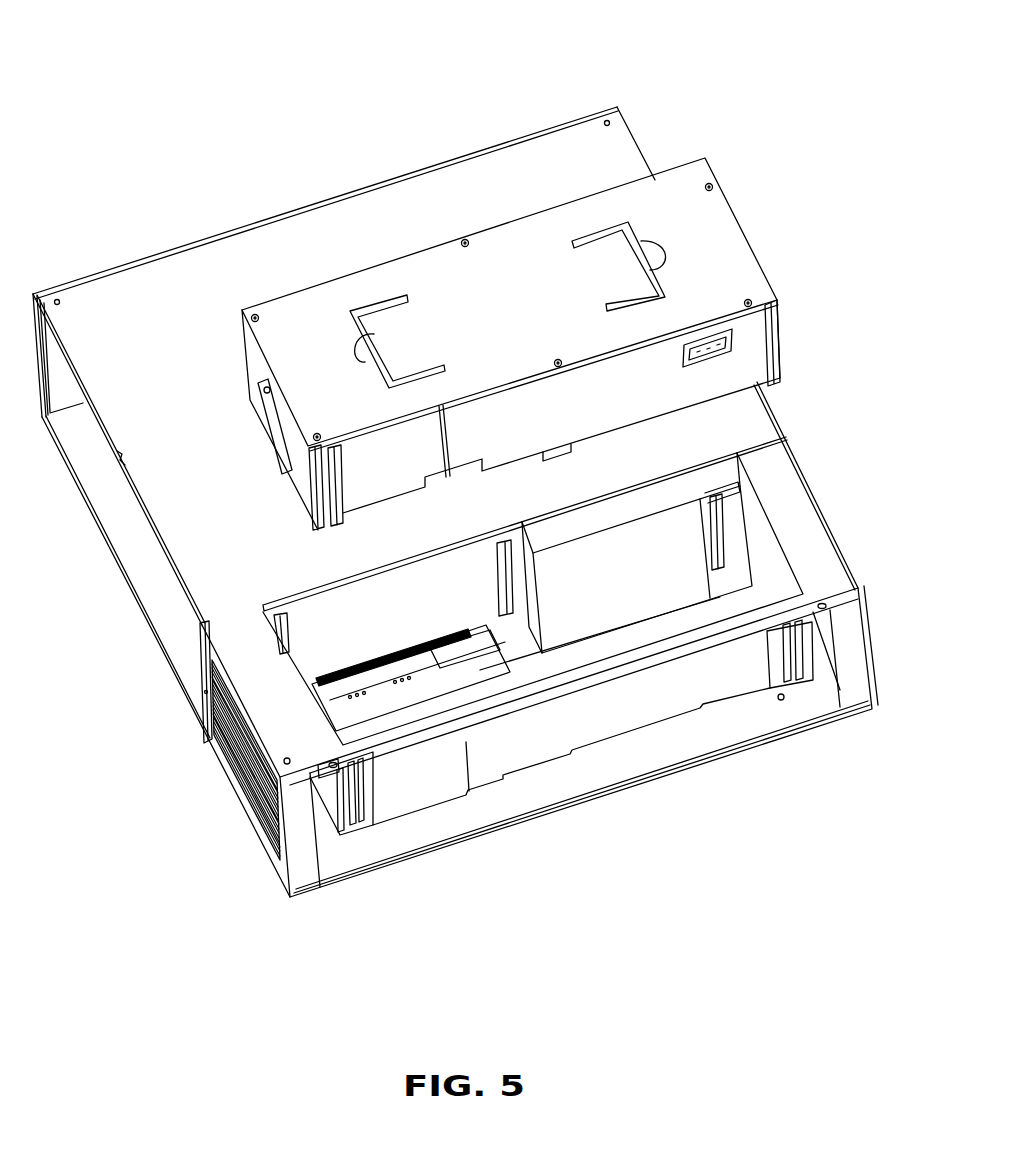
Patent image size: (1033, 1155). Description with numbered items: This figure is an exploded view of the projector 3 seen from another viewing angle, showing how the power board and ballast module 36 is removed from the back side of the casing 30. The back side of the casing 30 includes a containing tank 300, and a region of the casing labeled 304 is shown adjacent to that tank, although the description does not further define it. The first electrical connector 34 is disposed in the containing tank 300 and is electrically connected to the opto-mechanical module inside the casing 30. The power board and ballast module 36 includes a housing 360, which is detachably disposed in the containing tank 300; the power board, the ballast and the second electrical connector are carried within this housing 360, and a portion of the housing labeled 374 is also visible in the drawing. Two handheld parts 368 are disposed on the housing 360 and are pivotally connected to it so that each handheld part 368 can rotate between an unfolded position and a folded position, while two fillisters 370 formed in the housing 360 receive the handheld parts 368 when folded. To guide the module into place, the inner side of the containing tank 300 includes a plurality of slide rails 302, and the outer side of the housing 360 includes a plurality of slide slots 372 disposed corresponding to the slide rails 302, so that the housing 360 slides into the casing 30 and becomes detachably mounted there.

The projector 3 is at (560, 77).
The casing 30 is at (177, 248).
The top cover plate 304 is at (98, 307).
The containing tank 300 is at (771, 553).
The slide rails 302 is at (285, 622).
The first electrical connector 34 is at (381, 660).
The power board and ballast module 36 is at (732, 155).
The housing 360 is at (494, 230).
The handheld part 368 is at (377, 353).
The fillister 370 is at (376, 302).
The slide slot 372 is at (766, 352).
The side wall of power module 374 is at (737, 270).